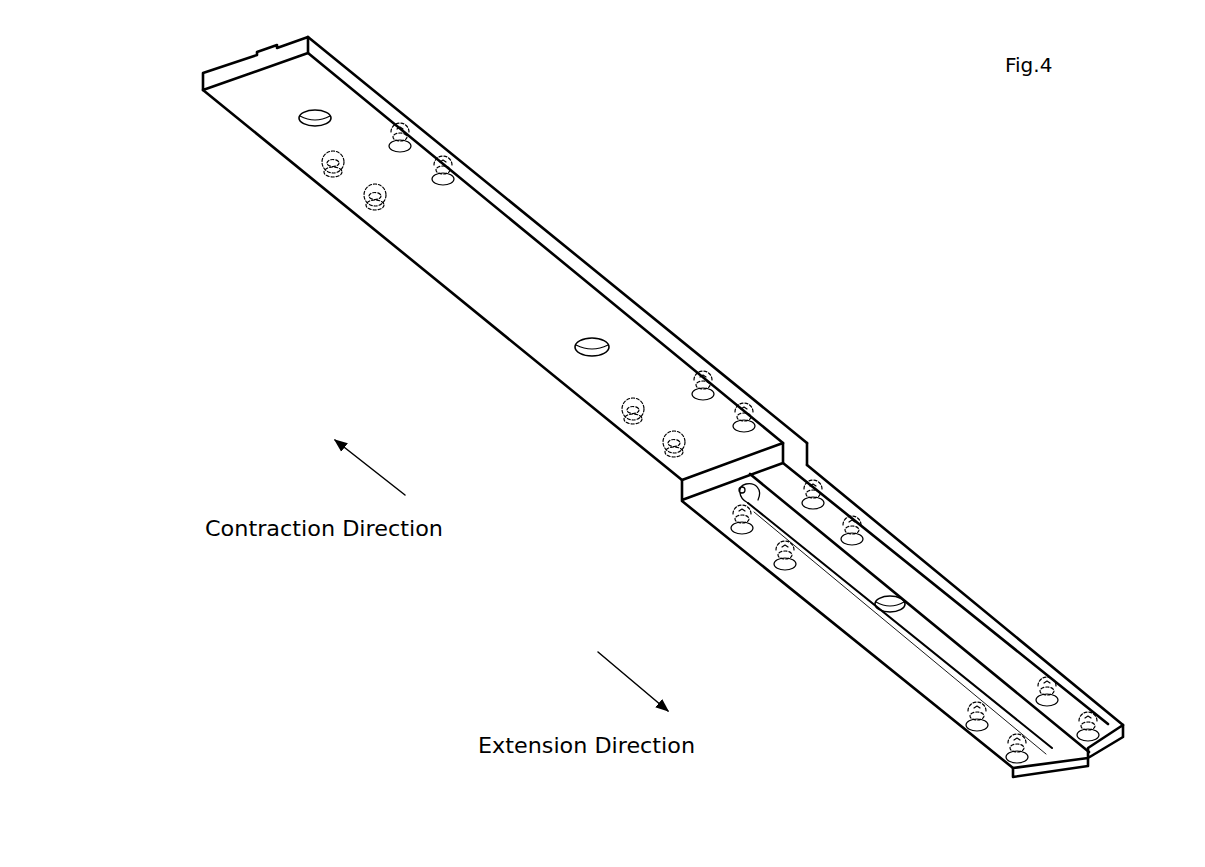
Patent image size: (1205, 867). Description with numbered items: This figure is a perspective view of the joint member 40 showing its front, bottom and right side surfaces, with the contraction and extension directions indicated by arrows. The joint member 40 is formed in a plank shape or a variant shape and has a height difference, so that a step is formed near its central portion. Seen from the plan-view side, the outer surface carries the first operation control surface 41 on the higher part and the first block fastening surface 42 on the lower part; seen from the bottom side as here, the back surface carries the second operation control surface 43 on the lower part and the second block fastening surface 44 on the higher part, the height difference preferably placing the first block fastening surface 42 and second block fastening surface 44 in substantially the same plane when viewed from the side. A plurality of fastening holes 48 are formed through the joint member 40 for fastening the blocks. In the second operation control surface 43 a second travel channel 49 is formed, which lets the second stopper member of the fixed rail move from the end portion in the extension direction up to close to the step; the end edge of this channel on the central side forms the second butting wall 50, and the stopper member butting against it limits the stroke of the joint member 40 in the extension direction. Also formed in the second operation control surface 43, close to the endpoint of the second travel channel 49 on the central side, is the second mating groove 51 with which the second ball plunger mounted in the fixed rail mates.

The joint member 40 is at (880, 253).
The first operation control surface 41 is at (568, 232).
The first block fastening surface 42 is at (970, 578).
The second operation control surface 43 is at (848, 580).
The second block fastening surface 44 is at (437, 247).
The fastening holes 48 is at (410, 147).
The second travel channel 49 is at (957, 666).
The second butting wall 50 is at (770, 478).
The second mating groove 51 is at (741, 497).